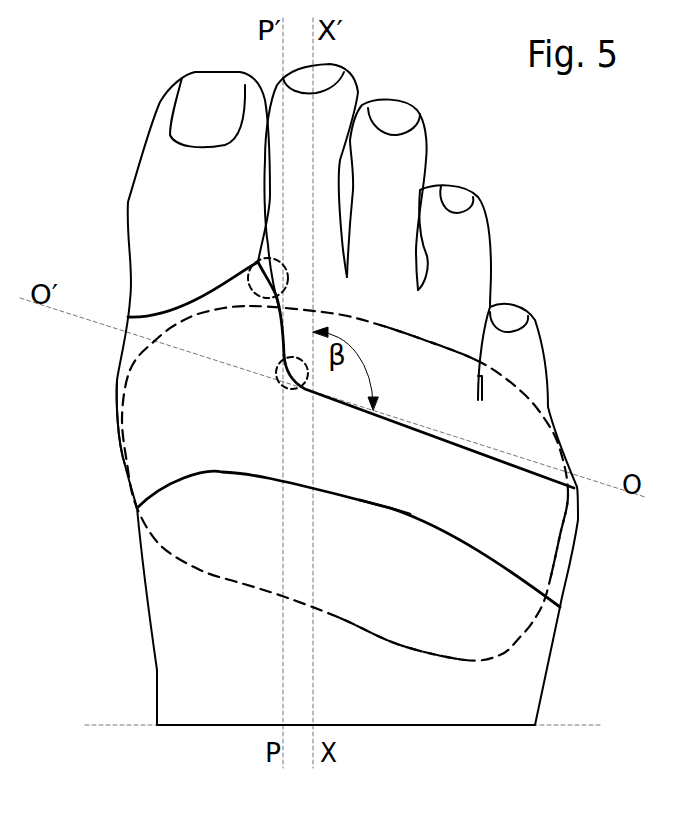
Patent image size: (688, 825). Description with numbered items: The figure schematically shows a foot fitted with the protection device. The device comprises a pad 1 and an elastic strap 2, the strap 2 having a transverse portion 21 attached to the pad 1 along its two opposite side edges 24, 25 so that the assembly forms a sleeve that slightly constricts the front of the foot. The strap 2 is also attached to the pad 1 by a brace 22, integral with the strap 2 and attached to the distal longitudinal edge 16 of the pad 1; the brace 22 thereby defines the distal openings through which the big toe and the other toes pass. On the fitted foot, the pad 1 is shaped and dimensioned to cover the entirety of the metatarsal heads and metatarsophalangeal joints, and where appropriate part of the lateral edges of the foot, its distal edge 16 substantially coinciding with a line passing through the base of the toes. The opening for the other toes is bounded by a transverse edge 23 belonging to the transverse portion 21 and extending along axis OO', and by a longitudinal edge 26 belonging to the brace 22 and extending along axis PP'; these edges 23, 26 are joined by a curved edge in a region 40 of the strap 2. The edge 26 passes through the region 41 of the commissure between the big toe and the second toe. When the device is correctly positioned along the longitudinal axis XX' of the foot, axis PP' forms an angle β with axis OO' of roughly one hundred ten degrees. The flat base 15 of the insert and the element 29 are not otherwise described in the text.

The pad 1 is at (507, 643).
The elastic strap 2 is at (142, 413).
The flat base 15 is at (400, 640).
The distal longitudinal edge 16 is at (437, 340).
The transverse portion 21 is at (520, 535).
The brace 22 is at (228, 297).
The transverse edge 23 is at (527, 460).
The side edge 24 is at (117, 450).
The side edge 25 is at (560, 533).
The longitudinal edge 26 is at (285, 332).
The rear edge of support band 29 is at (390, 508).
The region 40 is at (276, 373).
The region of the commissure 41 is at (249, 270).